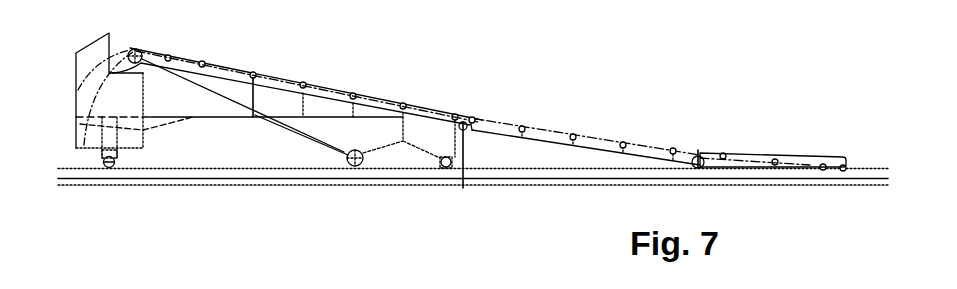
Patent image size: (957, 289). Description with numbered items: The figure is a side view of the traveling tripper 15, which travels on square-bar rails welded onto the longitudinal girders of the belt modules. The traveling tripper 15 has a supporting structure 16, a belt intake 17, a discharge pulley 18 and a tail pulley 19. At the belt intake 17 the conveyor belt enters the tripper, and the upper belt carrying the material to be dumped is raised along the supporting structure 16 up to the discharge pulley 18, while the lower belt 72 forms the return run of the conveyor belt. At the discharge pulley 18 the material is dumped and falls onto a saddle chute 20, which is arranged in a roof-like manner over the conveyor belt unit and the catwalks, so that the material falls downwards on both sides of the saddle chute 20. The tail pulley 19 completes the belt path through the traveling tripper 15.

The traveling tripper 15 is at (352, 60).
The supporting structure 16 is at (277, 98).
The belt intake 17 is at (542, 140).
The discharge pulley 18 is at (137, 50).
The tail pulley 19 is at (355, 166).
The saddle chute 20 is at (108, 98).
The lower belt 72 is at (192, 60).